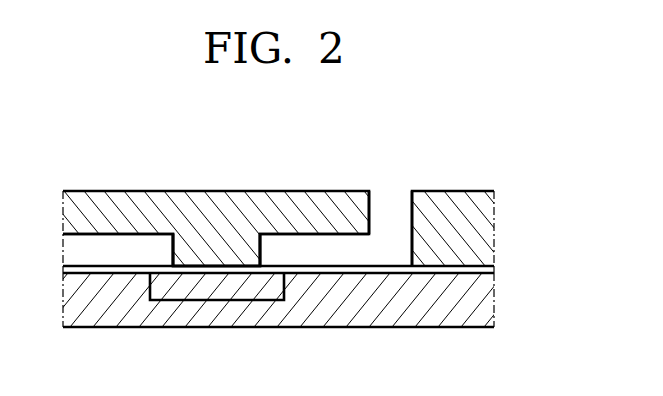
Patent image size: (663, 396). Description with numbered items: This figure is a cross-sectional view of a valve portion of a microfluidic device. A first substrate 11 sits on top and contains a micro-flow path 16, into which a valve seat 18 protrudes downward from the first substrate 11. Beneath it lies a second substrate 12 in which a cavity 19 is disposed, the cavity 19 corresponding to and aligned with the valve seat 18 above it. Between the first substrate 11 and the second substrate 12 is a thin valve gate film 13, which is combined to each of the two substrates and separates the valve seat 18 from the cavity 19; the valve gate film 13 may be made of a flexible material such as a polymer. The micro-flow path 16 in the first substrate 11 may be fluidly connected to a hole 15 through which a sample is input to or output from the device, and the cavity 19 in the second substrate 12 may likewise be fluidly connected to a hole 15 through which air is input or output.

The first substrate 11 is at (488, 230).
The second substrate 12 is at (488, 305).
The valve gate film 13 is at (488, 268).
The hole 15 is at (393, 200).
The micro-flow path 16 is at (117, 248).
The valve seat 18 is at (178, 253).
The cavity 19 is at (217, 290).